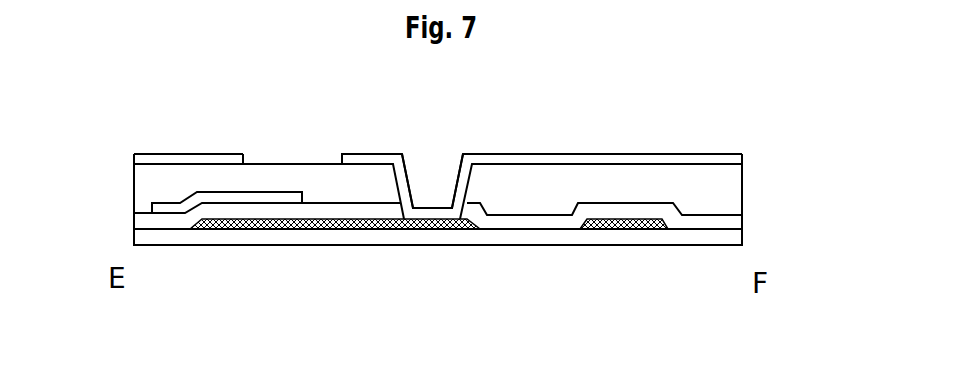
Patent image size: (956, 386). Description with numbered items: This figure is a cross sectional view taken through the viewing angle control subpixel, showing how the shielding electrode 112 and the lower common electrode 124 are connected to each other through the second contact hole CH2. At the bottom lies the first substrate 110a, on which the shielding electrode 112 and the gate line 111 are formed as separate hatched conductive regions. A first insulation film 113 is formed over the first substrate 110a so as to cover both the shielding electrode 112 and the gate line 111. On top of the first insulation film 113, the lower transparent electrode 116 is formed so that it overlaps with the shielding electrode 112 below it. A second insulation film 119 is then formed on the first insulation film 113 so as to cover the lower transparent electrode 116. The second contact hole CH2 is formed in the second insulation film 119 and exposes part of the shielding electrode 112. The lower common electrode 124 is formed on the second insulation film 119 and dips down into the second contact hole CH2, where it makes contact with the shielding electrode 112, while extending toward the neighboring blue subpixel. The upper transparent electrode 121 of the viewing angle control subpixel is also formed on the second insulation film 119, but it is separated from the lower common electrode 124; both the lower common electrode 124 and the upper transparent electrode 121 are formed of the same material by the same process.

The first substrate 110a is at (742, 237).
The gate line 111 is at (628, 227).
The shielding electrode 112 is at (318, 224).
The first insulation film 113 is at (500, 222).
The lower transparent electrode 116 is at (152, 210).
The second insulation film 119 is at (553, 207).
The upper transparent electrode 121 is at (133, 162).
The lower common electrode 124 is at (742, 162).
The second contact hole CH2 is at (404, 215).